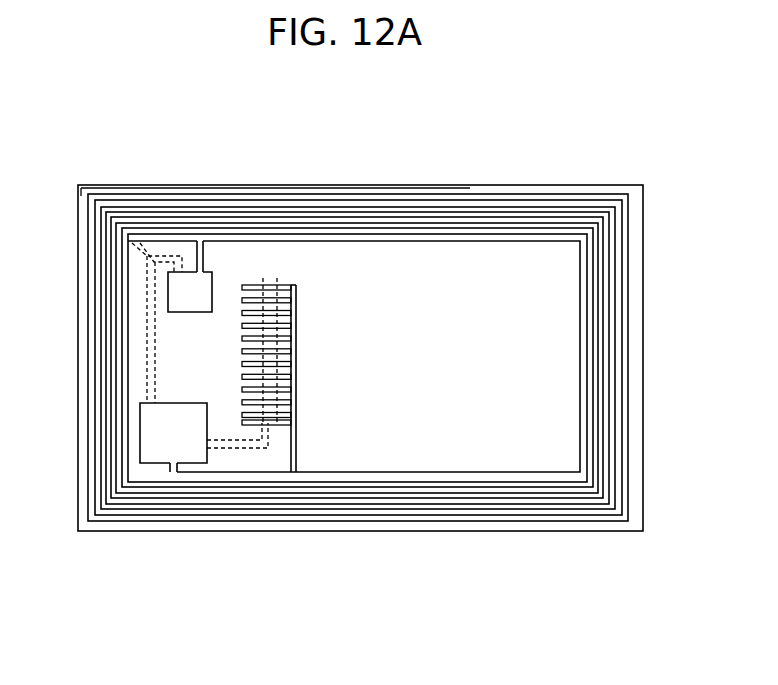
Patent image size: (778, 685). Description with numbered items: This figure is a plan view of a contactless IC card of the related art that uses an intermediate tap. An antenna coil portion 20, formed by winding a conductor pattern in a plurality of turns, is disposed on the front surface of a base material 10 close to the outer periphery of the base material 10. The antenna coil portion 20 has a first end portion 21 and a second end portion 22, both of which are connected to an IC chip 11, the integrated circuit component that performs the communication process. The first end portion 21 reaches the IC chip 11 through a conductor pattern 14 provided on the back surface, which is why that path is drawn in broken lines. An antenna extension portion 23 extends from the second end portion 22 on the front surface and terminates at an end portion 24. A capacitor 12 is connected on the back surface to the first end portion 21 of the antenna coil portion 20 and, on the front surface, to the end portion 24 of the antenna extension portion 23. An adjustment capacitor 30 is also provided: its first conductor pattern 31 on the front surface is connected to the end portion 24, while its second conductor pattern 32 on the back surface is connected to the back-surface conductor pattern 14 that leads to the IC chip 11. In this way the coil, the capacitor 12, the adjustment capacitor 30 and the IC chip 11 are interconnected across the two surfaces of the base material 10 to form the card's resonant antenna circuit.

The base material 10 is at (480, 531).
The antenna coil portion 20 is at (496, 192).
The first end portion 21 is at (89, 186).
The second end portion 22 is at (205, 258).
The antenna extension portion 23 is at (583, 288).
The end portion 24 is at (172, 472).
The IC chip 11 is at (192, 312).
The capacitor 12 is at (140, 451).
The conductor pattern 14 is at (148, 337).
The adjustment capacitor 30 is at (297, 367).
The first conductor pattern 31 is at (282, 284).
The second conductor pattern 32 is at (267, 280).